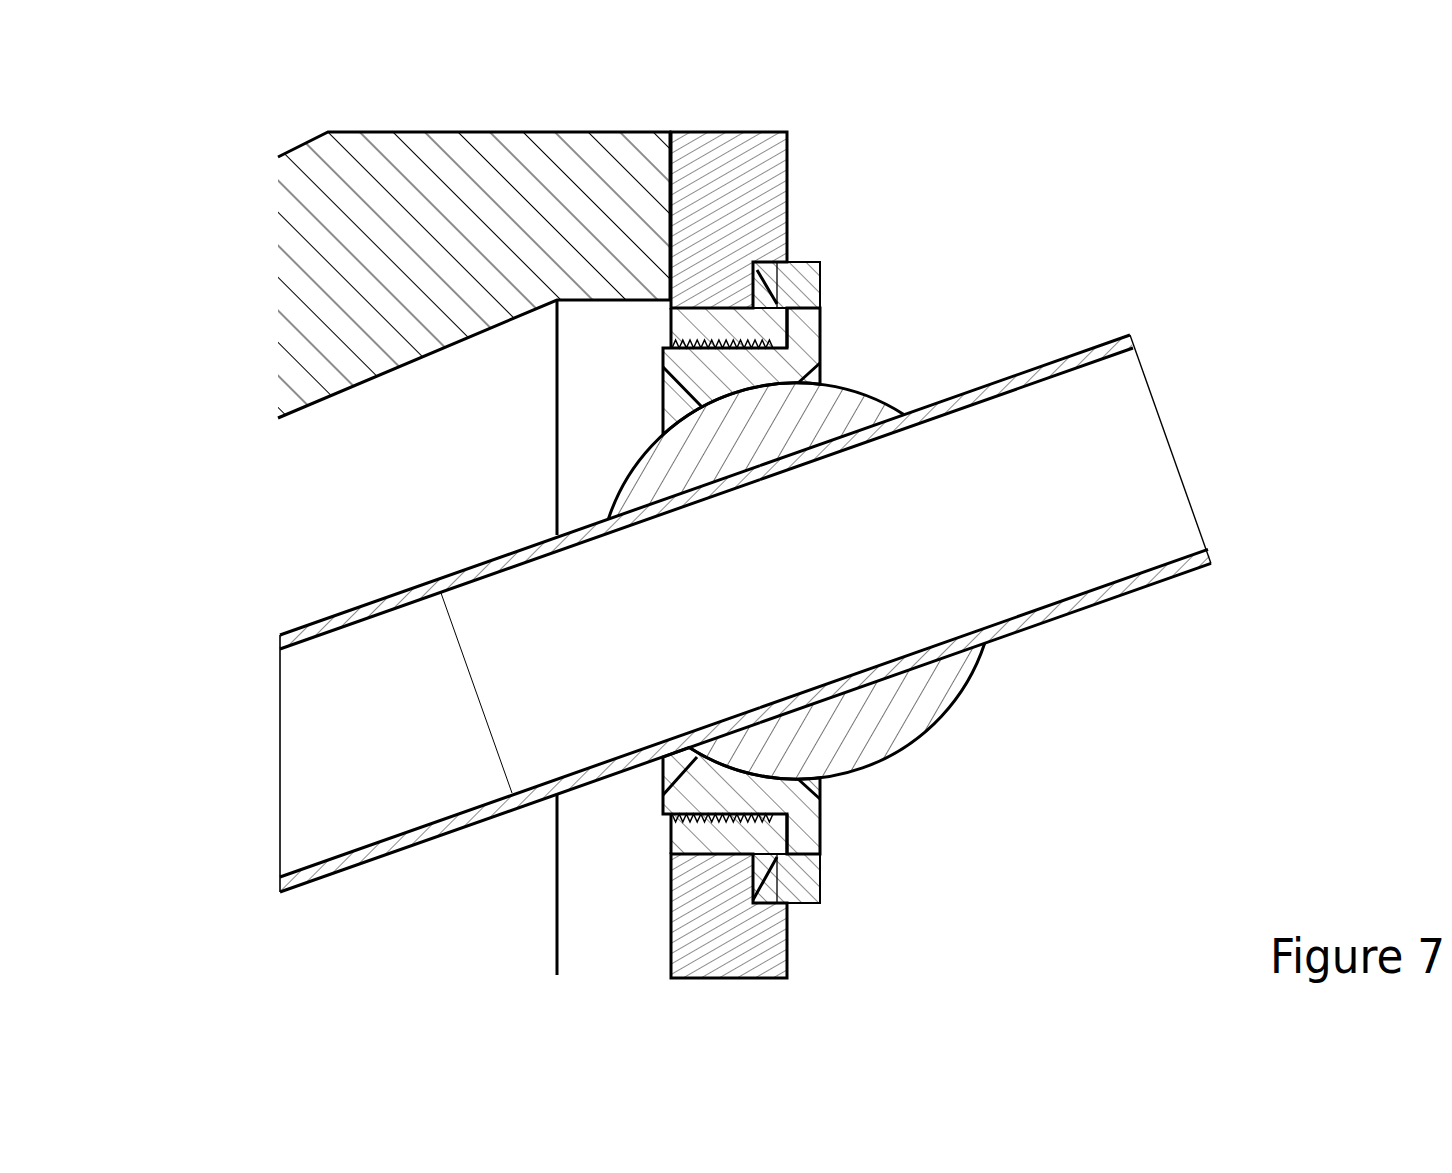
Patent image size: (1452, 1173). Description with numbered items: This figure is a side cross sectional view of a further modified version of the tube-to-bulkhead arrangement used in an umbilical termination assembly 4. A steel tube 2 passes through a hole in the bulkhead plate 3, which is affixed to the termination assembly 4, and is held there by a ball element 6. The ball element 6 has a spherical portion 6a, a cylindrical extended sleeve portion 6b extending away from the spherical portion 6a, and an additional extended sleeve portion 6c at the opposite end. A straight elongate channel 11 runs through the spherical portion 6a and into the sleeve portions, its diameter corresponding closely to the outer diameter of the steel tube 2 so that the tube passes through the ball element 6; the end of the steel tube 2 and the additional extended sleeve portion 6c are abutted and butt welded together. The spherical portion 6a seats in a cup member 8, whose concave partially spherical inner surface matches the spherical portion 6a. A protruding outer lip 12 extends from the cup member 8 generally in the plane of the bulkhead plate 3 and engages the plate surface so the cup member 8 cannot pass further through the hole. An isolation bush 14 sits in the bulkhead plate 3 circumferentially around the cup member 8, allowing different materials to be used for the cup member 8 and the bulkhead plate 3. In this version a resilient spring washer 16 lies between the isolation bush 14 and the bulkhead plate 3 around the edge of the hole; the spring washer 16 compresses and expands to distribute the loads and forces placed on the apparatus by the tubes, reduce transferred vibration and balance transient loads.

The termination assembly 4 is at (258, 115).
The bulkhead plate 3 is at (758, 186).
The spring washer 16 is at (757, 273).
The isolation bush 14 is at (790, 283).
The outer lip 12 is at (798, 365).
The cup member 8 is at (810, 808).
The steel tube 2 is at (352, 610).
The additional extended sleeve portion 6c is at (473, 570).
The extended sleeve portion 6b is at (1040, 363).
The ball element 6 is at (963, 727).
The spherical portion 6a is at (852, 730).
The channel 11 is at (1059, 580).